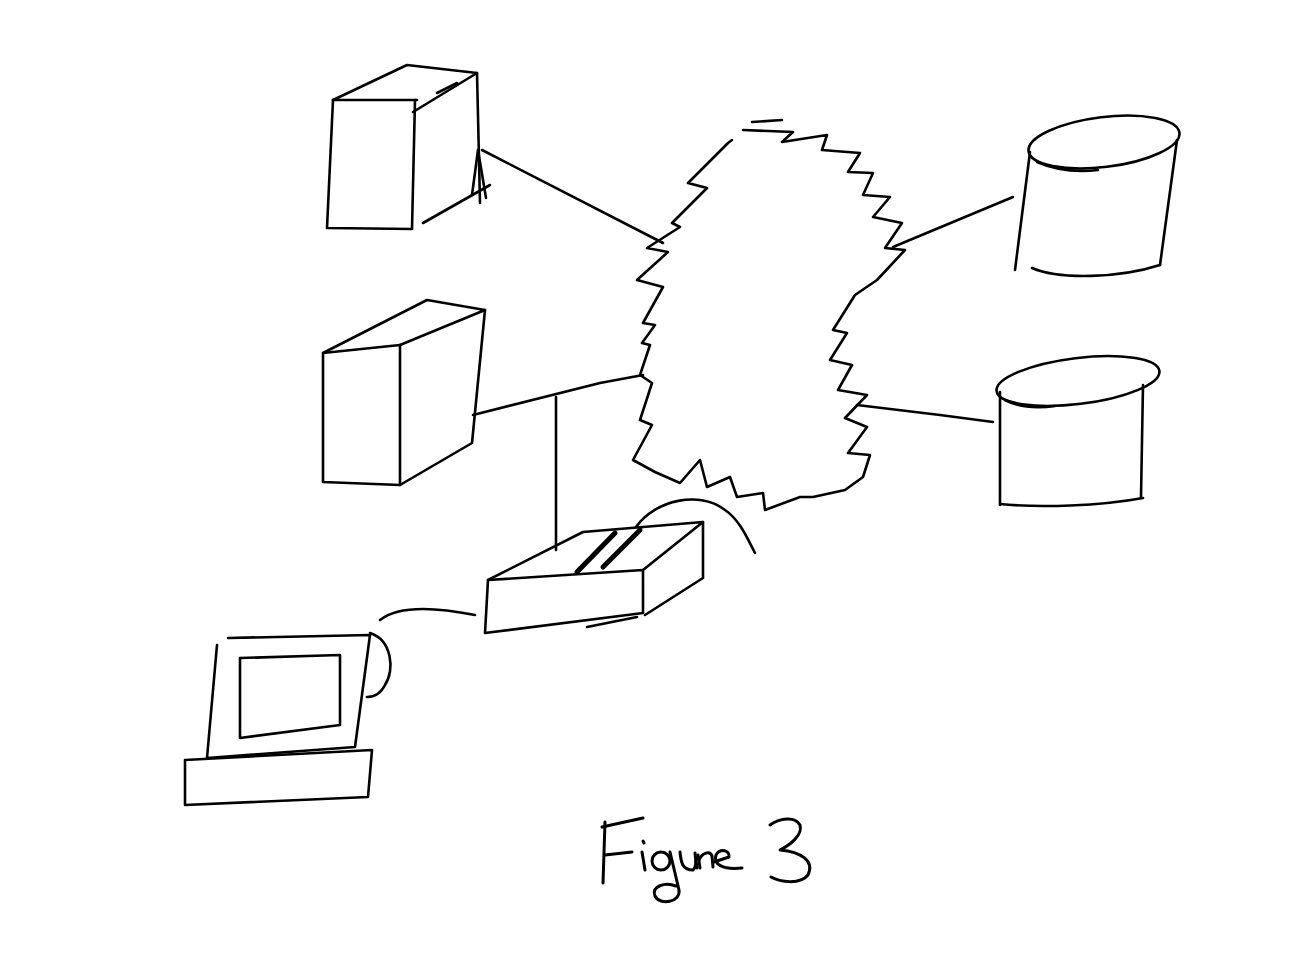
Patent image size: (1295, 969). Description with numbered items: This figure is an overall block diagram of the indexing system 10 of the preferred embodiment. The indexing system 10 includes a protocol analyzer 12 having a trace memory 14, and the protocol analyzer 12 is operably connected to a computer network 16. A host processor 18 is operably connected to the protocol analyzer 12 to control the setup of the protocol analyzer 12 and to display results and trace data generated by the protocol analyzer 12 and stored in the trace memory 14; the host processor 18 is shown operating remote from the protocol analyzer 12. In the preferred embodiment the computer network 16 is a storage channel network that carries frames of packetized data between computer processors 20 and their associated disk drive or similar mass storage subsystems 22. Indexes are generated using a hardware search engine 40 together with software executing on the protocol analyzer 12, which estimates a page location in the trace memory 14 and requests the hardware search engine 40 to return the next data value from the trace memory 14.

The indexing system 10 is at (637, 698).
The protocol analyzer 12 is at (687, 595).
The trace memory 14 is at (718, 536).
The computer network 16 is at (830, 148).
The host processor 18 is at (372, 755).
The computer processor 20 is at (327, 168).
The mass storage subsystem 22 is at (1170, 210).
The hardware search engine 40 is at (557, 550).